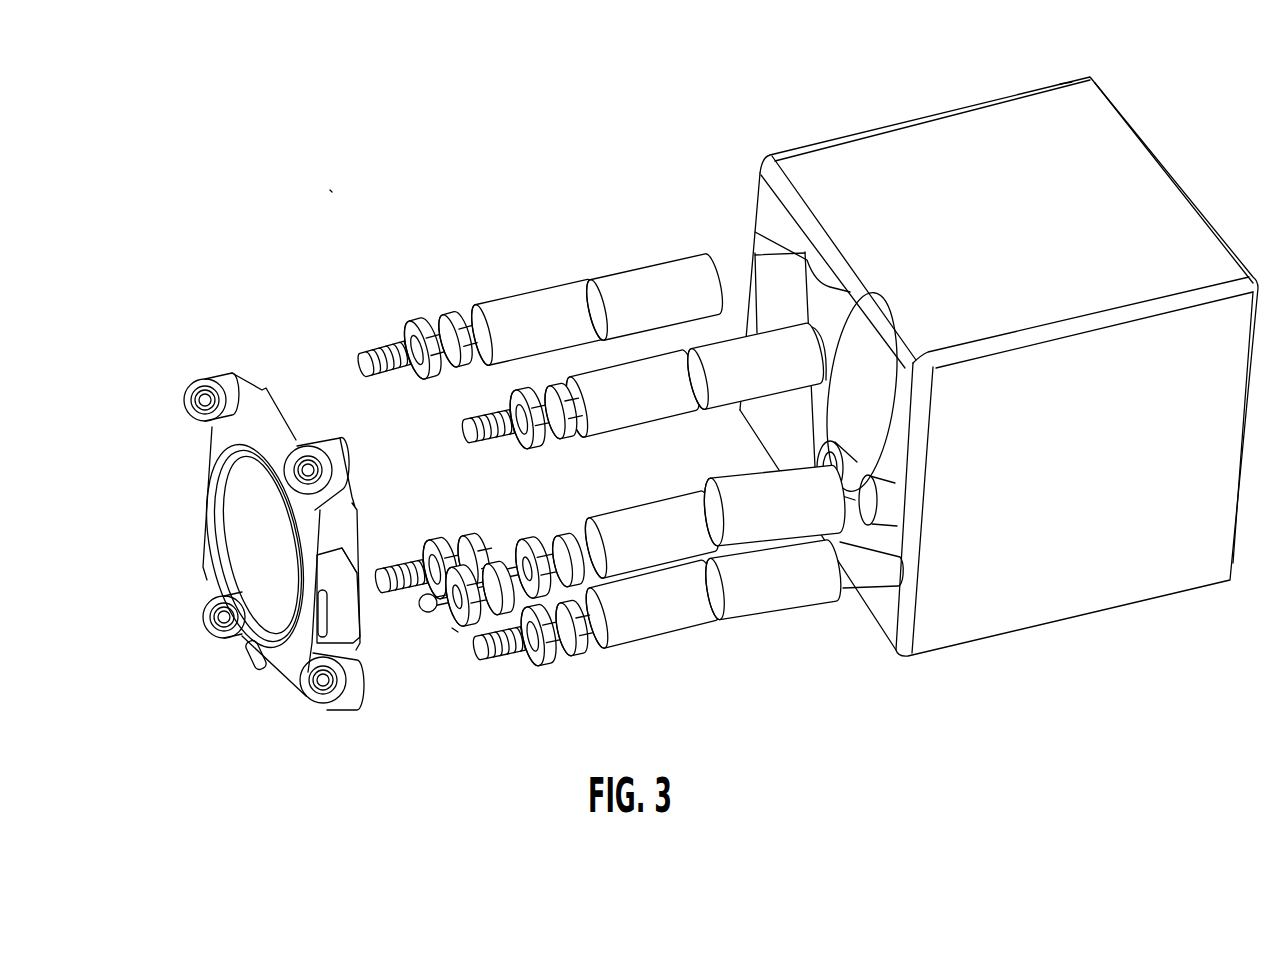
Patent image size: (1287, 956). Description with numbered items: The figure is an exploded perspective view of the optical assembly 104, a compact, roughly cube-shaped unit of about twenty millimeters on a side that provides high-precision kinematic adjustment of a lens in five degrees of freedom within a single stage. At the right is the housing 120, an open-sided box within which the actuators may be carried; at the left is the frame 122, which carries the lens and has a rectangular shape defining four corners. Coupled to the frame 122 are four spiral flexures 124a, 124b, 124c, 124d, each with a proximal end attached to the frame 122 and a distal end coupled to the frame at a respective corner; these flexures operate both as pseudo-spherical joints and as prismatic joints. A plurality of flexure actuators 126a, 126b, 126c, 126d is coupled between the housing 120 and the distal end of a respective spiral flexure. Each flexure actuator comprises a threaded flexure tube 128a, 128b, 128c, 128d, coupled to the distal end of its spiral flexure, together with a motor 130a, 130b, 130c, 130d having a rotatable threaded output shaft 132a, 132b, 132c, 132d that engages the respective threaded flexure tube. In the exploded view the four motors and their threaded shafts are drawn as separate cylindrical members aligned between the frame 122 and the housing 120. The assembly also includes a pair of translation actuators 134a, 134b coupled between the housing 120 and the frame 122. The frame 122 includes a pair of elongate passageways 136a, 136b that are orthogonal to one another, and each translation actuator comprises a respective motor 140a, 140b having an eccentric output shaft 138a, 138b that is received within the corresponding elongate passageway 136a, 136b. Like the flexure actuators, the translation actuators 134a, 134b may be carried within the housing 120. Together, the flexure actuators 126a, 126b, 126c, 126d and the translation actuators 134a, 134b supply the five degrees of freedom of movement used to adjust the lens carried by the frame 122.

The optical assembly 104 is at (327, 186).
The housing 120 is at (1000, 112).
The frame 122 is at (267, 543).
The spiral flexure 124a is at (215, 632).
The spiral flexure 124b is at (215, 360).
The spiral flexure 124c is at (322, 432).
The spiral flexure 124d is at (348, 710).
The flexure actuator 126a is at (614, 484).
The flexure actuator 126b is at (665, 245).
The flexure actuator 126c is at (713, 333).
The flexure actuator 126d is at (795, 622).
The threaded flexure tube 128a is at (207, 615).
The threaded flexure tube 128b is at (195, 400).
The threaded flexure tube 128c is at (287, 440).
The threaded flexure tube 128d is at (326, 710).
The motor 130a is at (668, 507).
The motor 130b is at (535, 277).
The motor 130c is at (608, 427).
The motor 130d is at (713, 622).
The rotatable threaded output shaft 132a is at (383, 572).
The rotatable threaded output shaft 132b is at (386, 343).
The rotatable threaded output shaft 132c is at (468, 435).
The rotatable threaded output shaft 132d is at (502, 650).
The translation actuator 134a is at (460, 637).
The translation actuator 134b is at (843, 520).
The elongate passageway 136a is at (262, 672).
The elongate passageway 136b is at (330, 624).
The eccentric output shaft 138a is at (437, 610).
The eccentric output shaft 138b is at (510, 533).
The motor 140a is at (600, 645).
The motor 140b is at (663, 507).